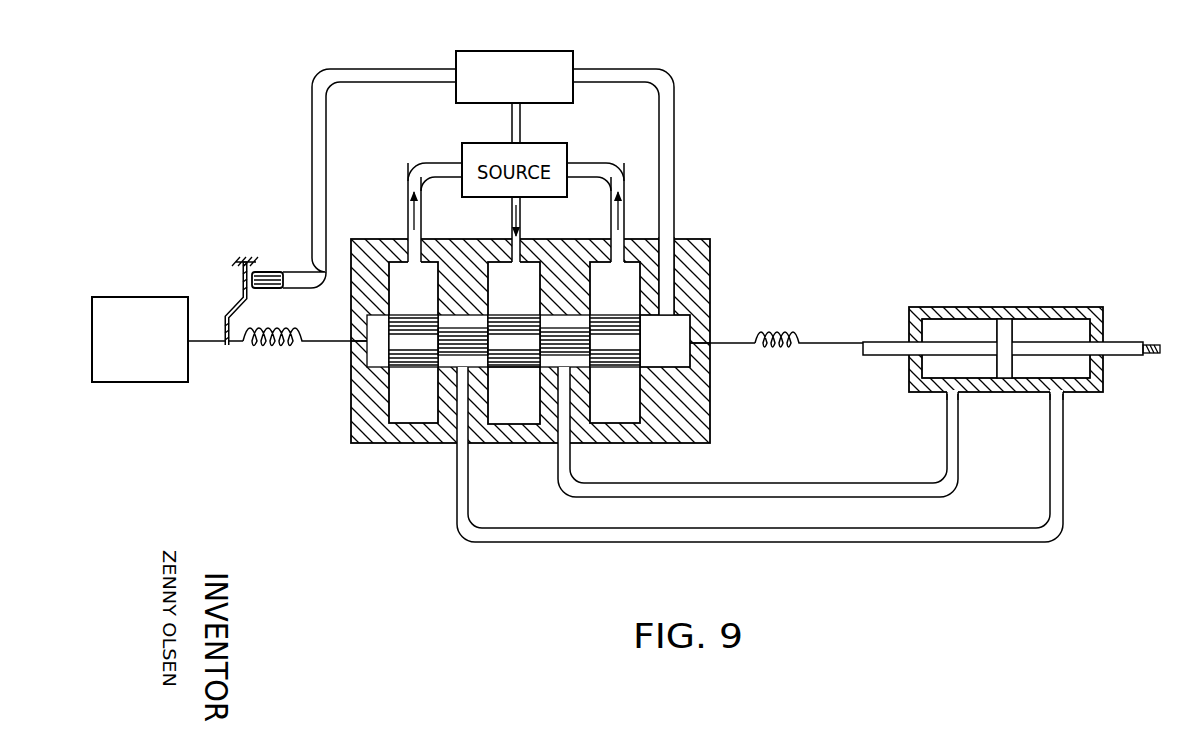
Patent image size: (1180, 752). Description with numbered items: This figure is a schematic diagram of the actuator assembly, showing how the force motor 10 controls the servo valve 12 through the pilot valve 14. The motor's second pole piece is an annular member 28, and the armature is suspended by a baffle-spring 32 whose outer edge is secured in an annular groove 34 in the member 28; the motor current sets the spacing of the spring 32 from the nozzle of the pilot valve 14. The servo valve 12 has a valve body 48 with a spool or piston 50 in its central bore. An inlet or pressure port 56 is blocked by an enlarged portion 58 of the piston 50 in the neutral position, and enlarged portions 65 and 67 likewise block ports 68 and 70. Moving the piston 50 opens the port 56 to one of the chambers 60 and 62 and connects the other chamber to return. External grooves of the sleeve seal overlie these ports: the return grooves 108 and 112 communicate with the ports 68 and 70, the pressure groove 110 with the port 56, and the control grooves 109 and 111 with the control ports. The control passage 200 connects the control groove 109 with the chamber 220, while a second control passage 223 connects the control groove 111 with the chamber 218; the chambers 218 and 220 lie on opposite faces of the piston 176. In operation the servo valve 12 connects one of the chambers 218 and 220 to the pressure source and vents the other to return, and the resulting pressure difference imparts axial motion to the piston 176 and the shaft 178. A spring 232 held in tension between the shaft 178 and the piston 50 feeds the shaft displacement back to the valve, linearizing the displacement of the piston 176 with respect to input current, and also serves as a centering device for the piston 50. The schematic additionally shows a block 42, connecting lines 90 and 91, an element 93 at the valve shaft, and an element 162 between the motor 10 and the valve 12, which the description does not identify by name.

The force motor 10 is at (125, 292).
The servo valve 12 is at (707, 357).
The pilot valve 14 is at (268, 270).
The annular member 28 is at (243, 262).
The baffle-spring 32 is at (248, 305).
The annular groove 34 is at (245, 259).
The control unit 42 is at (537, 51).
The valve body 48 is at (708, 268).
The spool or piston 50 is at (532, 375).
The inlet or pressure port 56 is at (503, 294).
The enlarged portion 58 is at (518, 347).
The chamber 60 is at (464, 327).
The chamber 62 is at (558, 328).
The enlarged portion 65 is at (413, 347).
The enlarged portion 67 is at (616, 348).
The port 68 is at (399, 294).
The port 70 is at (604, 294).
The supply line 90 is at (522, 134).
The control line 91 is at (680, 207).
The shaft end 93 is at (676, 333).
The return groove 108 is at (407, 241).
The control groove 109 is at (466, 440).
The pressure groove 110 is at (518, 250).
The control groove 111 is at (565, 445).
The return groove 112 is at (623, 243).
The spring 162 is at (280, 350).
The piston 176 is at (1003, 330).
The shaft 178 is at (958, 345).
The control passage 200 is at (1058, 447).
The chamber 218 is at (936, 333).
The chamber 220 is at (1052, 332).
The second control passage 223 is at (952, 440).
The spring 232 is at (795, 337).